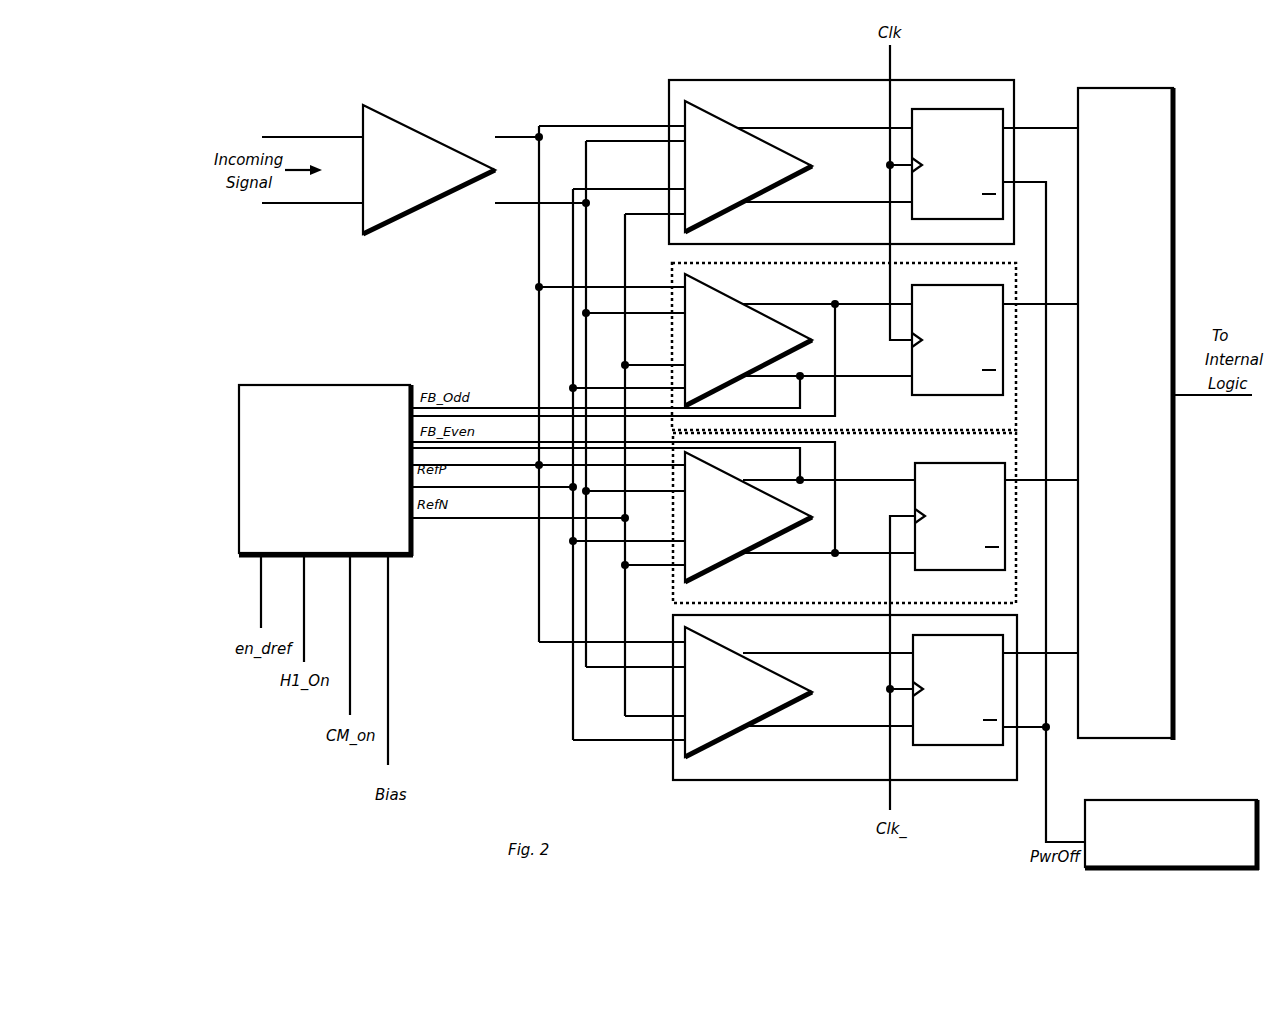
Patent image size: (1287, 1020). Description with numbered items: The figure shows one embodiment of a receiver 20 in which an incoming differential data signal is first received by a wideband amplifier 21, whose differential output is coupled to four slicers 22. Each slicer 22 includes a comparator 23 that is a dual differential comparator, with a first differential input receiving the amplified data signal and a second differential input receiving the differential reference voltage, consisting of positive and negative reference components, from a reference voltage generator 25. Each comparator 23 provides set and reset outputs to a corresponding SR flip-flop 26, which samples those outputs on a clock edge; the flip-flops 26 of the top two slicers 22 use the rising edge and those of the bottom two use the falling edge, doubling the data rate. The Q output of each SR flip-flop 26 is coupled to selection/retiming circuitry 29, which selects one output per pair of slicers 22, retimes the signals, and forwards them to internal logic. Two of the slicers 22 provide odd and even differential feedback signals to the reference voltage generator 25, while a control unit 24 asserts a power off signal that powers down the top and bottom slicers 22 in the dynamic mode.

The receiver 20 is at (527, 70).
The wideband amplifier (WBA) 21 is at (429, 169).
The slicer 22 is at (843, 430).
The comparator 23 is at (748, 429).
The control unit 24 is at (1172, 835).
The reference voltage generator 25 is at (326, 470).
The SR flip-flop 26 is at (958, 426).
The selection/retiming circuitry 29 is at (1125, 414).